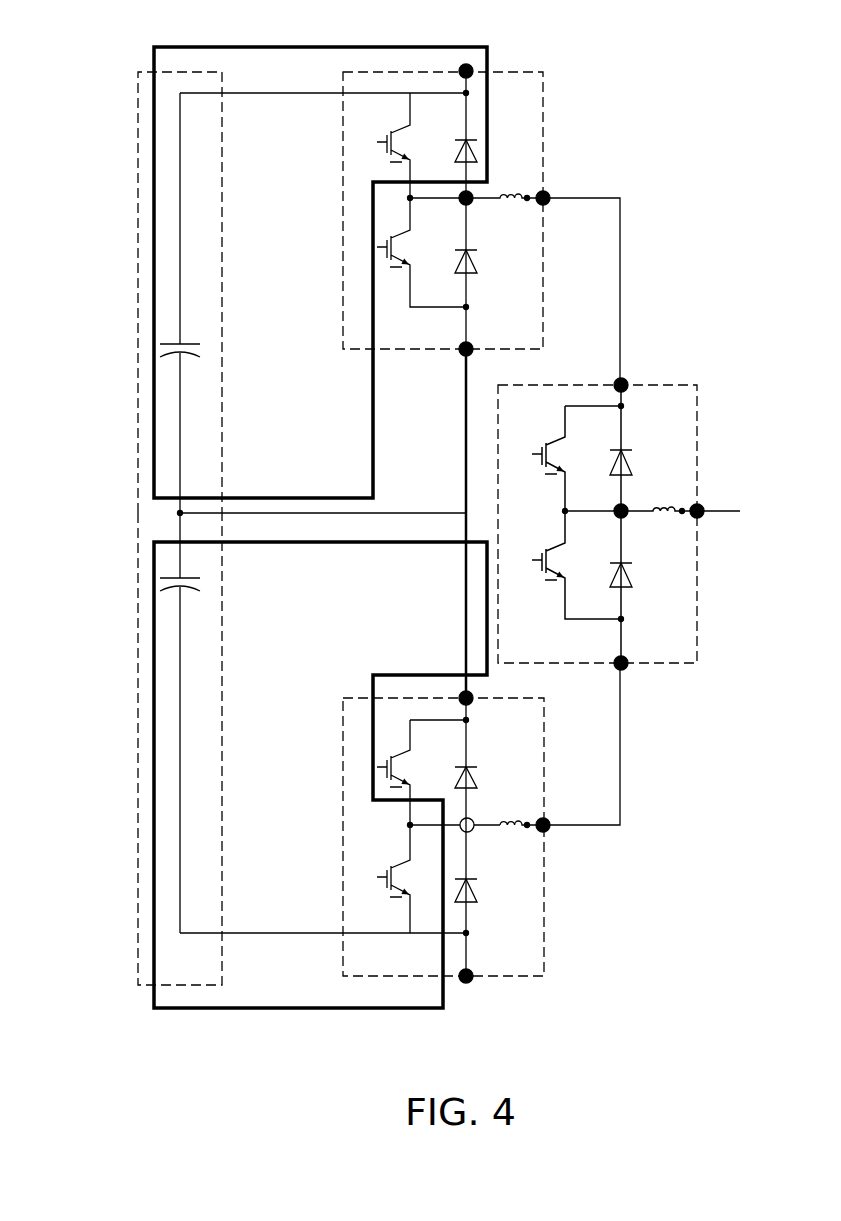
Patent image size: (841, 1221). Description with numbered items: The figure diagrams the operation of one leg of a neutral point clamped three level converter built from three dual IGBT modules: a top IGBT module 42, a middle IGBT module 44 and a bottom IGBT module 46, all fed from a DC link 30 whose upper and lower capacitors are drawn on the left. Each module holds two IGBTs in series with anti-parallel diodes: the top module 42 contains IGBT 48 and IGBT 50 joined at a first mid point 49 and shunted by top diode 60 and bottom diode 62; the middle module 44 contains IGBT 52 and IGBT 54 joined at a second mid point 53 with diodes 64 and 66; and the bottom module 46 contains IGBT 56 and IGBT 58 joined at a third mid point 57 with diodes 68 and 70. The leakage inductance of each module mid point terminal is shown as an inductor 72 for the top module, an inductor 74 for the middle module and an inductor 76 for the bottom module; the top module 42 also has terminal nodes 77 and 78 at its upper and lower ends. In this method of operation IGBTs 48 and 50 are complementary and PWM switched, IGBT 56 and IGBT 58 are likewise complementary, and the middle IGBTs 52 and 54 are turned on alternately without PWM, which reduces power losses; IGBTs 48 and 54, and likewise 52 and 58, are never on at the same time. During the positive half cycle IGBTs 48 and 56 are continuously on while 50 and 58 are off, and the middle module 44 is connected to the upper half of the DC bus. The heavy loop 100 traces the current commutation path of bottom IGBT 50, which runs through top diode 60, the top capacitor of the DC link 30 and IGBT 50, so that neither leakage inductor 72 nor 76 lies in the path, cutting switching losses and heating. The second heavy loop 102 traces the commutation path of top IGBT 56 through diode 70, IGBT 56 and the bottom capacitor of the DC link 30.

The DC link 30 is at (185, 72).
The top IGBT module 42 is at (549, 91).
The middle IGBT module 44 is at (704, 406).
The bottom IGBT module 46 is at (550, 718).
The IGBT 48 is at (377, 142).
The first mid point 49 is at (408, 198).
The IGBT 50 is at (377, 247).
The IGBT 52 is at (542, 462).
The second mid point 53 is at (563, 511).
The IGBT 54 is at (542, 572).
The IGBT 56 is at (380, 768).
The third mid point 57 is at (408, 825).
The IGBT 58 is at (385, 877).
The top diode 60 is at (477, 153).
The bottom diode 62 is at (475, 266).
The anti-parallel diode 64 is at (632, 463).
The anti-parallel diode 66 is at (632, 575).
The anti-parallel diode 68 is at (477, 777).
The anti-parallel diode 70 is at (475, 885).
The mid point leakage inductor 72 is at (510, 192).
The inductor 74 is at (665, 505).
The mid point leakage inductor 76 is at (510, 820).
The positive DC terminal node 77 is at (468, 65).
The negative DC terminal node 78 is at (462, 355).
The current commutation path 100 is at (148, 160).
The current commutation path 102 is at (148, 668).